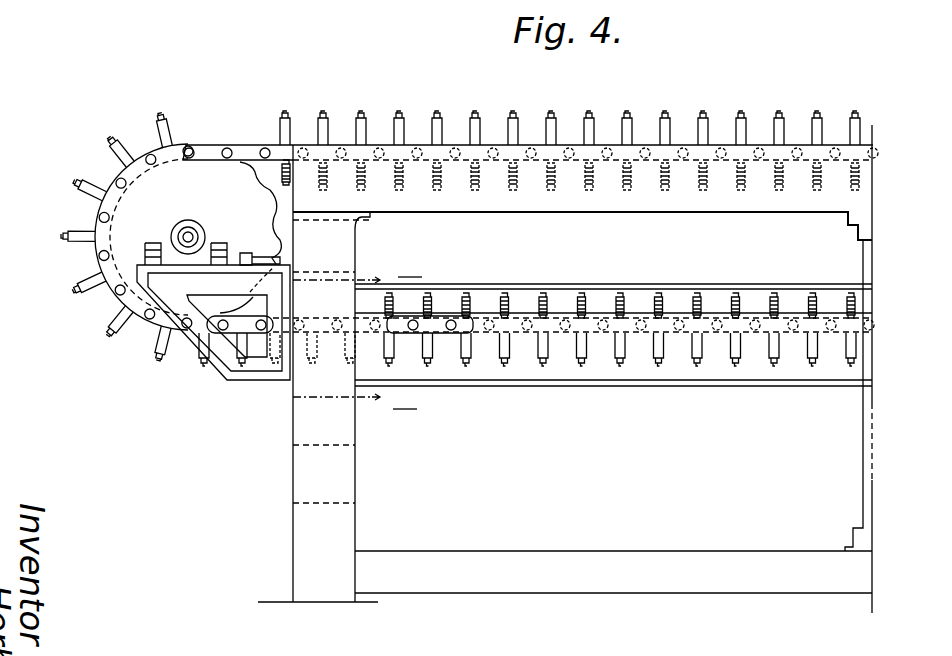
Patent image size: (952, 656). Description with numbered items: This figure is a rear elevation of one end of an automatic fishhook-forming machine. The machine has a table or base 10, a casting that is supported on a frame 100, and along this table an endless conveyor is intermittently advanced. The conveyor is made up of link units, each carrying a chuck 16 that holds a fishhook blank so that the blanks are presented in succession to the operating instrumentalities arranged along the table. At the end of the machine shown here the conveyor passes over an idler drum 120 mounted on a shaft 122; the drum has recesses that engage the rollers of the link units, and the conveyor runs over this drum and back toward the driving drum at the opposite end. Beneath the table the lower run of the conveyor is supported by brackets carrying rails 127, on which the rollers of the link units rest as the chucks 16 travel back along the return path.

The table or base 10 is at (862, 196).
The chuck 16 is at (743, 127).
The frame 100 is at (347, 253).
The idler drum 120 is at (127, 226).
The shaft 122 is at (191, 235).
The rails 127 is at (302, 356).